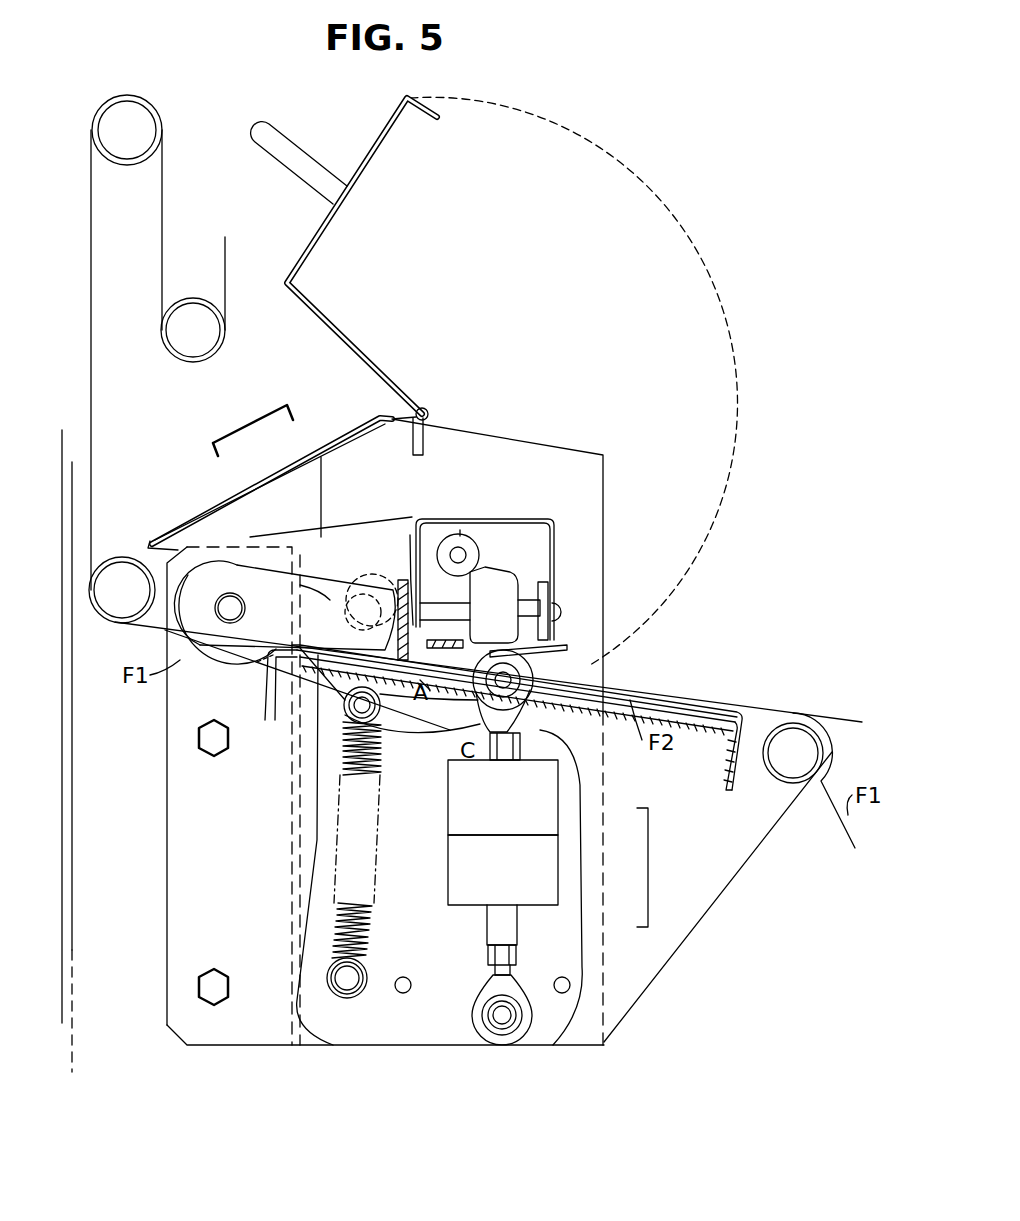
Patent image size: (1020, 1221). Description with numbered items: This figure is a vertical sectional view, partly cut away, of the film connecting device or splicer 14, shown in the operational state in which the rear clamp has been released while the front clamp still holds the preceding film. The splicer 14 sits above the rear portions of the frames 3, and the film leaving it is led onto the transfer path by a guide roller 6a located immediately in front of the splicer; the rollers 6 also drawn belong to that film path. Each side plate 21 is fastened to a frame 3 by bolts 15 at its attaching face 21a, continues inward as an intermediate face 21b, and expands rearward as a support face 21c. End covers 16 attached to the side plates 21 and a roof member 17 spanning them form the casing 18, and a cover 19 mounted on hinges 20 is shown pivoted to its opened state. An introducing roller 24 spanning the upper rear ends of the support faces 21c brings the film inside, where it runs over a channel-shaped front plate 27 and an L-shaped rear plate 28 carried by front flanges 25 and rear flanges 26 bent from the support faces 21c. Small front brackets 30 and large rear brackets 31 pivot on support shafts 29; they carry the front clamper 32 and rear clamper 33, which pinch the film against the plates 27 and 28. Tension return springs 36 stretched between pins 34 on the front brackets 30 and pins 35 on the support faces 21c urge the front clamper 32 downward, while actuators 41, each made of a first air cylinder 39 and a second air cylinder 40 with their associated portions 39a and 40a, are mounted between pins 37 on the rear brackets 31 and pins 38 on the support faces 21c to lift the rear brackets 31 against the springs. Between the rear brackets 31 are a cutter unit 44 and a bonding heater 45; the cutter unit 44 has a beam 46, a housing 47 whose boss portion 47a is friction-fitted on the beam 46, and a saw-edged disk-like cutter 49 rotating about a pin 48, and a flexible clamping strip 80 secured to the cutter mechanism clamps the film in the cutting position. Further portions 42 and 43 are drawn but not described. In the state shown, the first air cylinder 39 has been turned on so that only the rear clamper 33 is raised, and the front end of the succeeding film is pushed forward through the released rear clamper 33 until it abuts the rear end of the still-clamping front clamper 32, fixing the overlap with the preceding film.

The frame 3 is at (105, 800).
The roller 6 is at (103, 112).
The guide roller 6a is at (122, 556).
The connecting device 14 is at (762, 490).
The bolt 15 is at (195, 996).
The end cover 16 is at (322, 462).
The roof member 17 is at (278, 478).
The casing 18 is at (258, 424).
The cover 19 is at (330, 340).
The hinge 20 is at (426, 408).
The side plate 21 is at (168, 836).
The attaching face 21a is at (175, 735).
The intermediate face 21b is at (290, 836).
The support face 21c is at (700, 925).
The introducing roller 24 is at (785, 785).
The front flange 25 is at (312, 690).
The rear flange 26 is at (612, 710).
The front plate 27 is at (262, 700).
The rear plate 28 is at (705, 725).
The support shaft 29 is at (232, 603).
The front bracket 30 is at (365, 585).
The rear bracket 31 is at (372, 520).
The front clamper 32 is at (375, 585).
The rear clamper 33 is at (406, 580).
The pin 34 is at (375, 715).
The pin 35 is at (350, 985).
The tension return spring 36 is at (375, 785).
The pin 37 is at (520, 705).
The pin 38 is at (490, 1020).
The first air cylinder 39 is at (538, 890).
The plunger 39a is at (500, 942).
The second air cylinder 40 is at (545, 812).
The connector 40a is at (488, 750).
The actuator 41 is at (648, 860).
The arm portion 42 is at (338, 600).
The hole 43 is at (348, 612).
The cutter unit 44 is at (540, 510).
The bonding heater 45 is at (450, 706).
The beam 46 is at (432, 540).
The housing 47 is at (520, 517).
The boss portion 47a is at (460, 545).
The pin 48 is at (557, 608).
The disk-like cutter 49 is at (500, 573).
The flexible clamping strip 80 is at (580, 680).